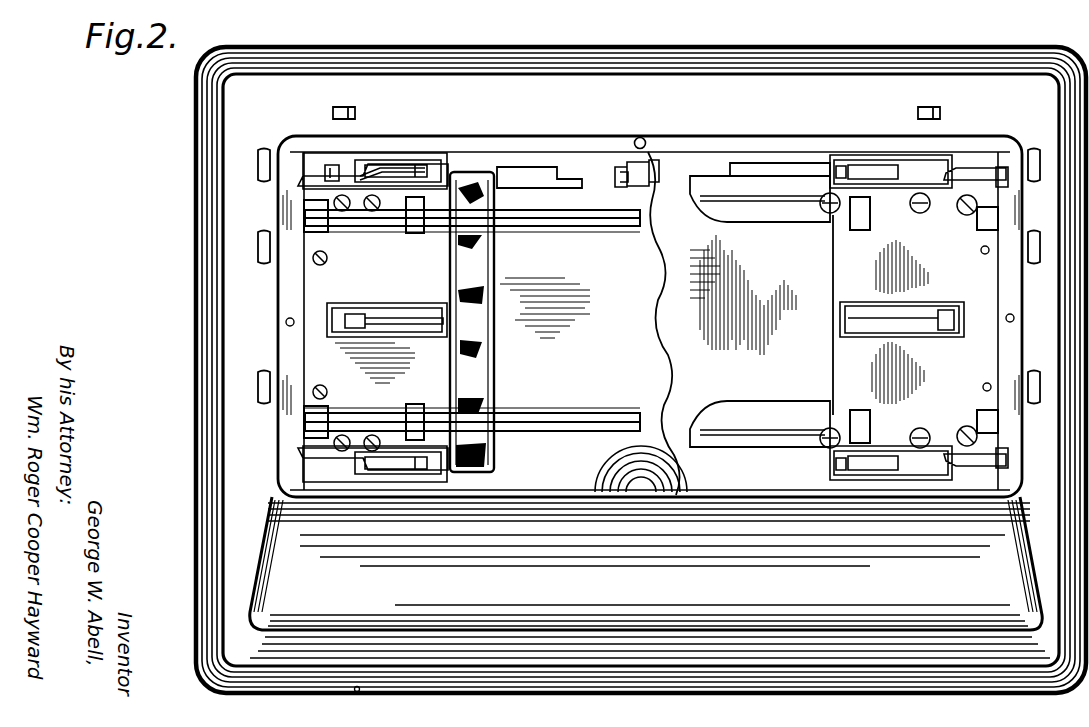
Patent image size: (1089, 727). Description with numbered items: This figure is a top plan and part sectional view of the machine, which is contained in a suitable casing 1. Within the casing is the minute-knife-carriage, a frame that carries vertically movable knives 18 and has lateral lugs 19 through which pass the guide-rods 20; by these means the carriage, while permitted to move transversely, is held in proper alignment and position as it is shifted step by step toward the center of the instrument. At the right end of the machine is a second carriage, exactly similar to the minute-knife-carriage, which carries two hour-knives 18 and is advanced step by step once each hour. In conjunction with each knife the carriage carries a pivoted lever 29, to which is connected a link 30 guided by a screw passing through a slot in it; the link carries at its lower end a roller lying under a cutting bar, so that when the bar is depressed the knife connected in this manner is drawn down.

The casing 1 is at (688, 72).
The knives 18 is at (422, 175).
The lateral lugs 19 is at (408, 218).
The guide-rods 20 is at (594, 226).
The pivoted lever 29 is at (375, 178).
The link 30 is at (334, 168).